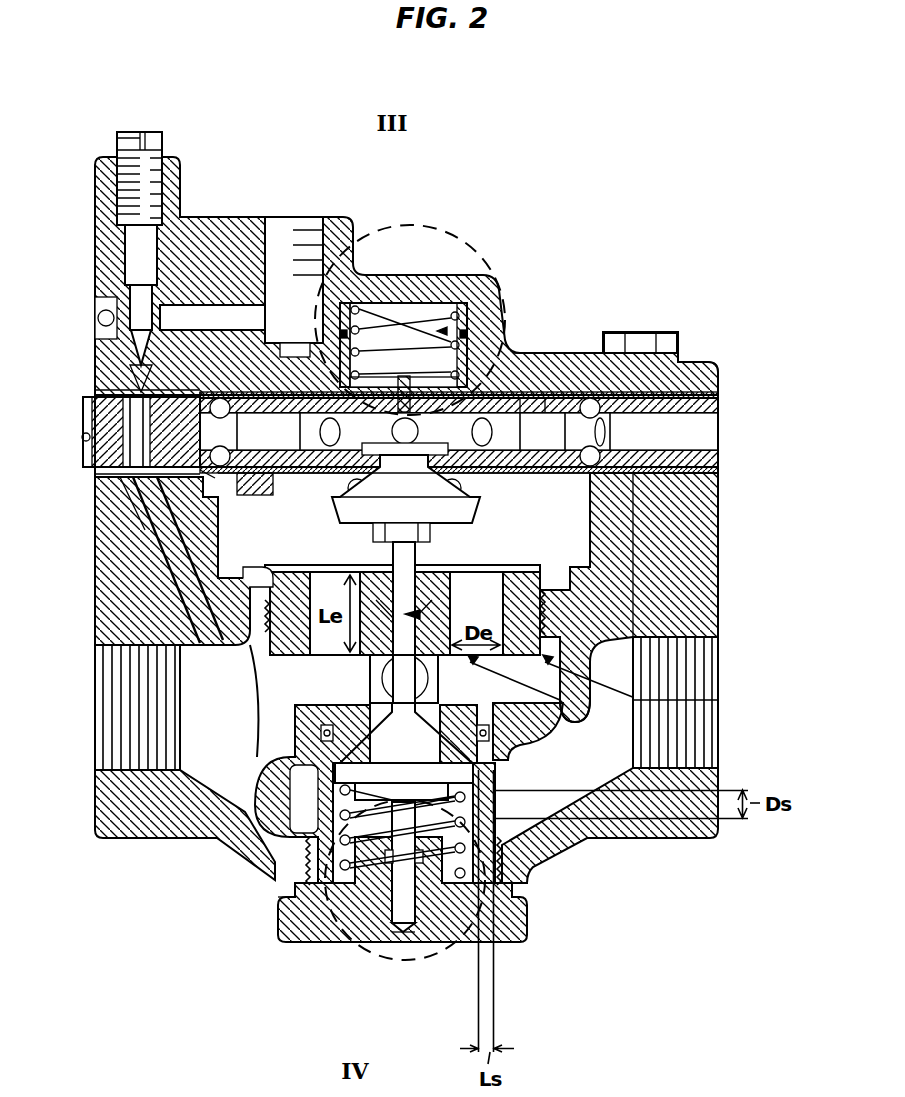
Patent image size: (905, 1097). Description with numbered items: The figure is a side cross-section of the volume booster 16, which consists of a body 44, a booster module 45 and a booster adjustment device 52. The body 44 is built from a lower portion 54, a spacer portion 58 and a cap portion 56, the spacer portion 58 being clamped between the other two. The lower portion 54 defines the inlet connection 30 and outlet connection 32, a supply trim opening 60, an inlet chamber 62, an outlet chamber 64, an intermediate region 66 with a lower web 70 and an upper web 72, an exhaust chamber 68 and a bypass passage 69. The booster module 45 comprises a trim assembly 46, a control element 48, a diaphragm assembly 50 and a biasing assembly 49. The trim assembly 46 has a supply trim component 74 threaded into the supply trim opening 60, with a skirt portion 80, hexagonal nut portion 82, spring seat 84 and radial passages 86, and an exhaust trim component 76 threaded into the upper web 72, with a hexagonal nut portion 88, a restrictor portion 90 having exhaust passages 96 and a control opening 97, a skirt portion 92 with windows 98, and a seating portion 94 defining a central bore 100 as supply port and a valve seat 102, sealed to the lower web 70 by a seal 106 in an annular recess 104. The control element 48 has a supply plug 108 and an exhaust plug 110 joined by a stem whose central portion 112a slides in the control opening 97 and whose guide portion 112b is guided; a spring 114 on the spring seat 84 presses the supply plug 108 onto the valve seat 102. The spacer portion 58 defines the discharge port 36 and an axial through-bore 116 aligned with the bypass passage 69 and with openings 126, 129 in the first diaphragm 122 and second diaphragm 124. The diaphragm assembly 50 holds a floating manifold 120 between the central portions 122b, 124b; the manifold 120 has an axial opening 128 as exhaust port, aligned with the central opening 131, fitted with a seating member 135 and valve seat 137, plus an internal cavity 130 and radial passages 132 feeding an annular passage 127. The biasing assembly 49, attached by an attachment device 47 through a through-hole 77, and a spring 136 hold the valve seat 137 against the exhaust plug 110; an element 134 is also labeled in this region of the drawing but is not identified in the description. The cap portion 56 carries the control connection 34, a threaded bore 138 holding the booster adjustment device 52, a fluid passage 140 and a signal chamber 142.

The volume booster 16 is at (665, 256).
The inlet connection 30 is at (680, 758).
The outlet connection 32 is at (115, 718).
The control connection 34 is at (310, 235).
The discharge port 36 is at (695, 425).
The body 44 is at (692, 557).
The booster module 45 is at (305, 547).
The trim assembly 46 is at (640, 680).
The attachment device 47 is at (445, 425).
The control element 48 is at (600, 606).
The biasing assembly 49 is at (484, 420).
The diaphragm assembly 50 is at (548, 400).
The booster adjustment device 52 is at (158, 135).
The lower portion 54 is at (700, 583).
The cap portion 56 is at (720, 373).
The spacer portion 58 is at (700, 406).
The supply trim opening 60 is at (318, 905).
The inlet chamber 62 is at (560, 784).
The outlet chamber 64 is at (195, 732).
The intermediate region 66 is at (248, 702).
The exhaust chamber 68 is at (530, 536).
The bypass passage 69 is at (195, 582).
The lower web 70 is at (507, 753).
The upper web 72 is at (245, 623).
The supply trim component 74 is at (325, 944).
The exhaust trim component 76 is at (255, 580).
The through-hole 77 is at (407, 417).
The skirt portion 80 is at (322, 762).
The hexagonal nut portion 82 is at (520, 912).
The spring seat 84 is at (456, 955).
The passages 86 is at (296, 888).
The hexagonal nut portion 88 is at (546, 600).
The restrictor portion 90 is at (625, 628).
The skirt portion 92 is at (650, 690).
The seating portion 94 is at (640, 725).
The exhaust passages 96 is at (315, 574).
The control opening 97 is at (425, 600).
The windows 98 is at (68, 665).
The central bore 100 is at (347, 885).
The valve seat 102 is at (404, 935).
The external annular recess 104 is at (290, 745).
The seal 106 is at (503, 727).
The supply plug 108 is at (330, 930).
The exhaust plug 110 is at (264, 512).
The central portion 112a is at (288, 700).
The guide portion 112b is at (366, 958).
The spring 114 is at (432, 900).
The axial through-bore 116 is at (110, 405).
The floating manifold 120 is at (555, 392).
The first diaphragm 122 is at (690, 395).
The central portion 122b is at (255, 392).
The second diaphragm 124 is at (720, 476).
The central portion 124b is at (430, 498).
The opening 126 is at (135, 388).
The annular passage 127 is at (205, 430).
The axial opening 128 is at (368, 340).
The opening 129 is at (205, 476).
The internal cavity 130 is at (548, 392).
The central opening 131 is at (375, 522).
The radial passages 132 is at (520, 392).
The pilot housing wall 134 is at (341, 320).
The seating member 135 is at (648, 518).
The spring 136 is at (405, 372).
The valve seat 137 is at (425, 500).
The threaded bore 138 is at (118, 268).
The fluid passage 140 is at (217, 318).
The signal chamber 142 is at (552, 392).